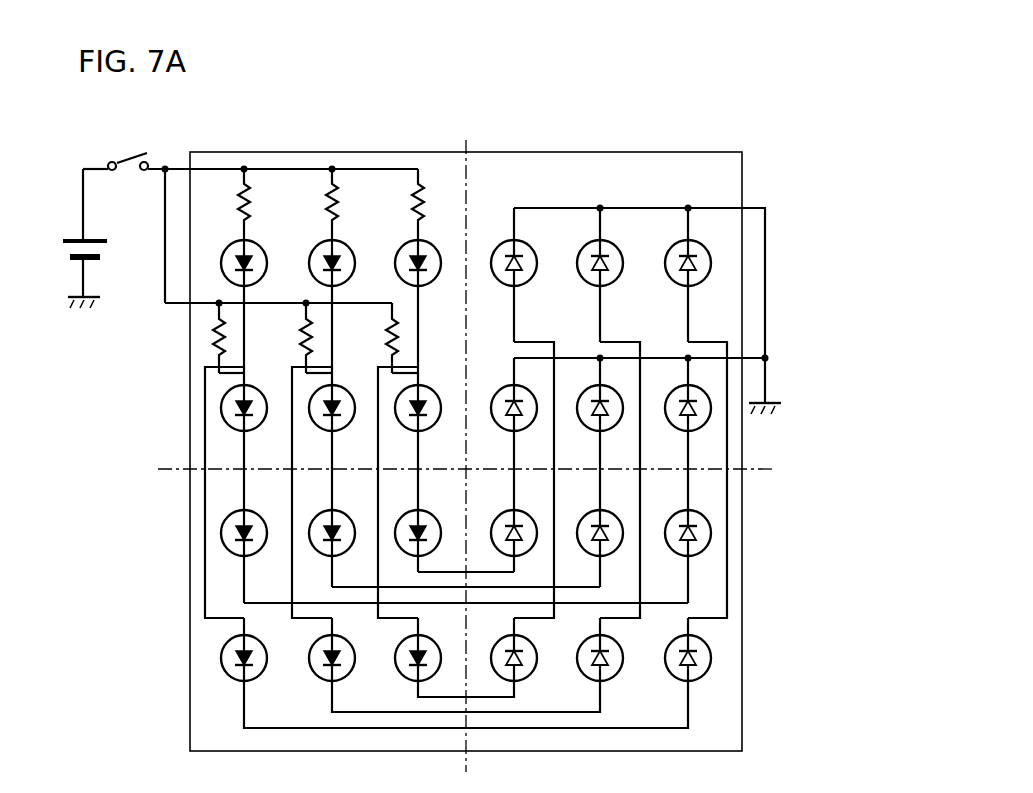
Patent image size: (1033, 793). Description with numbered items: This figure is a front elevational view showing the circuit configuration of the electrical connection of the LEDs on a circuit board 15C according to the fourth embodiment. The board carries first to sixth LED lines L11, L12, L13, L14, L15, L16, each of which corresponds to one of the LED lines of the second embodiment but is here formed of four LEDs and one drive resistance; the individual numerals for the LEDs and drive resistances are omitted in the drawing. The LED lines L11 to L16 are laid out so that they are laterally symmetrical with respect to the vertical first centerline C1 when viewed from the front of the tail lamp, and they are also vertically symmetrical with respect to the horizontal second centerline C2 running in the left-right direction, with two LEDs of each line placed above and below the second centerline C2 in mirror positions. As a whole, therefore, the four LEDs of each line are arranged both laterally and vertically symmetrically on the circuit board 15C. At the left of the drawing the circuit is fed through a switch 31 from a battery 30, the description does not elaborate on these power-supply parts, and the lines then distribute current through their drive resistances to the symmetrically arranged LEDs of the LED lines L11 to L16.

The circuit board 15C is at (640, 168).
The battery 30 is at (93, 235).
The switch 31 is at (110, 128).
The sixth LED line L16 is at (222, 222).
The fifth LED line L15 is at (313, 222).
The fourth LED line L14 is at (398, 222).
The third LED line L13 is at (262, 372).
The second LED line L12 is at (345, 357).
The first LED line L11 is at (430, 365).
The first centerline C1 is at (568, 466).
The second centerline C2 is at (536, 494).